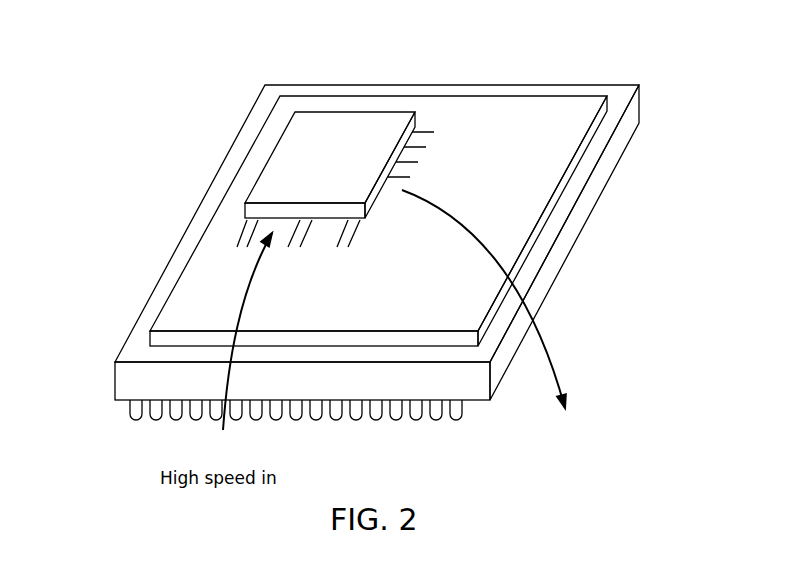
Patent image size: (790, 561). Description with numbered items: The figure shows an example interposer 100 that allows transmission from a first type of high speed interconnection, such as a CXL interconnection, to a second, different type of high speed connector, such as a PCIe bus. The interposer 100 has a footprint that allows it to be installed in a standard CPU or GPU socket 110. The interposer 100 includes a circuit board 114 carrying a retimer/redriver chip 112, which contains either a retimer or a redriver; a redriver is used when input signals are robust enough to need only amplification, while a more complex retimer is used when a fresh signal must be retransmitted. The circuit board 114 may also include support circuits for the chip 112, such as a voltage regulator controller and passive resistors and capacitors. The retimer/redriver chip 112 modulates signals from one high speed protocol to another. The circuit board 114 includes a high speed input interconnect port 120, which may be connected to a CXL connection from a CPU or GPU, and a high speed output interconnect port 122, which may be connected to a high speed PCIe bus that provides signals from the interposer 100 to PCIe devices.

The interposer 100 is at (255, 122).
The CPU or GPU socket 110 is at (615, 98).
The retimer/redriver chip 112 is at (275, 178).
The circuit board 114 is at (512, 210).
The high speed input interconnect port 120 is at (128, 409).
The high speed output interconnect port 122 is at (547, 333).